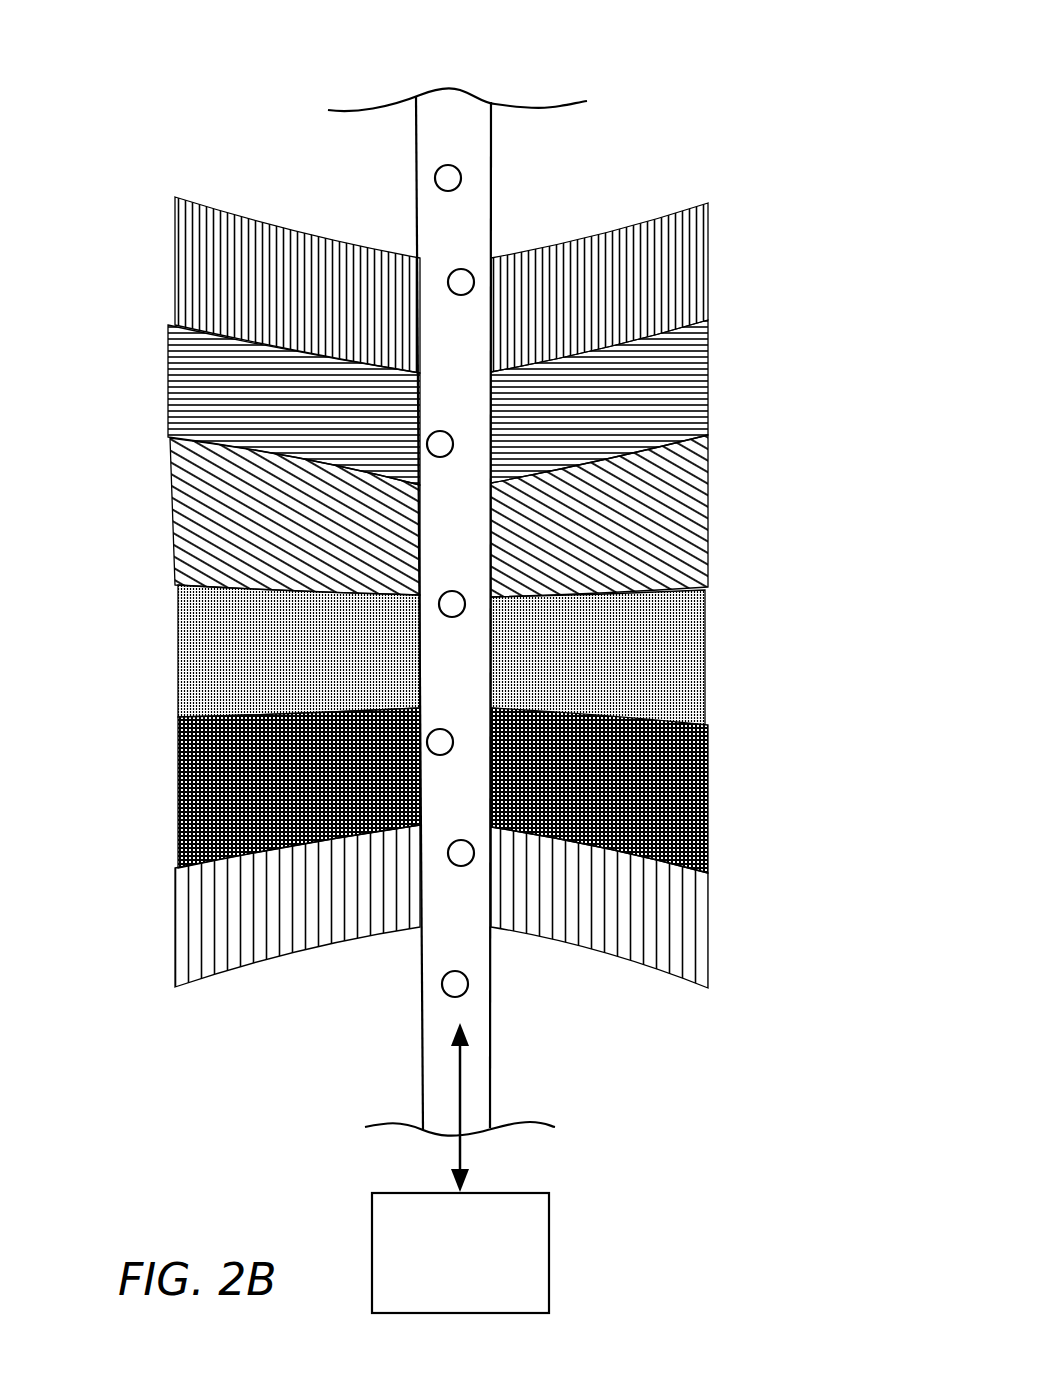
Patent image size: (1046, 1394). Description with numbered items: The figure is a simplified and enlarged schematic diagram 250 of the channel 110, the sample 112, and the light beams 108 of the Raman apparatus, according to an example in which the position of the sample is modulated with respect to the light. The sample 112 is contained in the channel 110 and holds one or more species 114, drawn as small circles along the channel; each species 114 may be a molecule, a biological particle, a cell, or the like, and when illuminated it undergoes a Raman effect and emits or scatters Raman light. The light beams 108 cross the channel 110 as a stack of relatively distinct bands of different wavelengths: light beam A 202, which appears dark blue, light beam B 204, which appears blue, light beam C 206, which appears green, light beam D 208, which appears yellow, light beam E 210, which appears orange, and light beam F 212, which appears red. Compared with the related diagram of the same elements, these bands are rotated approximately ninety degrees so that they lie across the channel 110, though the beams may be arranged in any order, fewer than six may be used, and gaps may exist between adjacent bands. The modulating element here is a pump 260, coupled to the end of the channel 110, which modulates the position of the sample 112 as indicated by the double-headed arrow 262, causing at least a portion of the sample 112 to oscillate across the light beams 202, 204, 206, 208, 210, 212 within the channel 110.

The schematic diagram 250 is at (226, 24).
The light beams 108 is at (134, 166).
The channel 110 is at (492, 145).
The sample 112 is at (455, 128).
The species 114 is at (474, 280).
The light beam A 202 is at (708, 238).
The light beam B 204 is at (708, 362).
The light beam C 206 is at (708, 510).
The light beam D 208 is at (708, 648).
The light beam E 210 is at (710, 802).
The light beam F 212 is at (708, 938).
The pump 260 is at (438, 1280).
The arrow 262 is at (463, 1075).